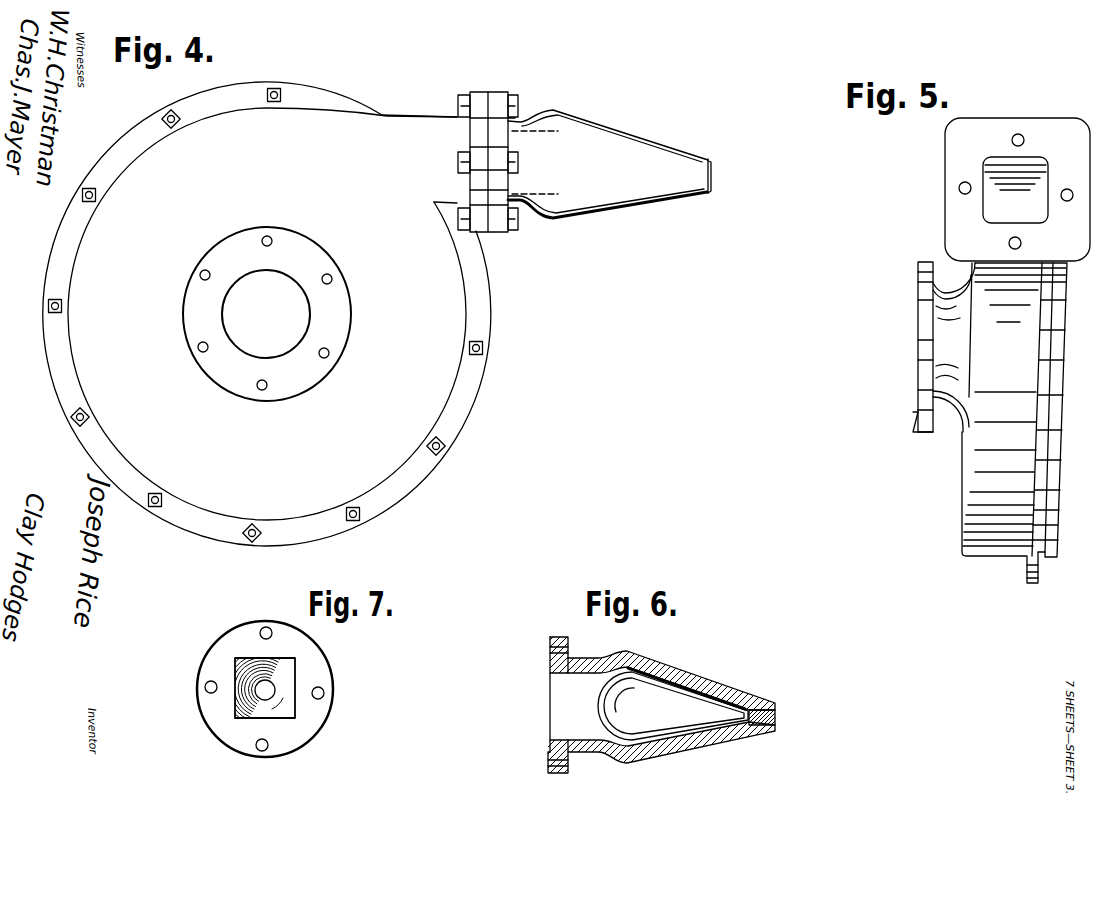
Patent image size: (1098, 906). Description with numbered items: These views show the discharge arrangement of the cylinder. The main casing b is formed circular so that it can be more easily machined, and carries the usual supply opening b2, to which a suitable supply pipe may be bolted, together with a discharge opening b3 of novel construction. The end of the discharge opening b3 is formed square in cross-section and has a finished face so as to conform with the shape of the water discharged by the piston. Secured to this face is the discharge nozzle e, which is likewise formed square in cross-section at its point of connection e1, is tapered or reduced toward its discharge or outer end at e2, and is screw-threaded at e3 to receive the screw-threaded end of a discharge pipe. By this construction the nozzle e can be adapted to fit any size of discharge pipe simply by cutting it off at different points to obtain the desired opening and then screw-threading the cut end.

In FIG. 4, the main casing b is at (267, 314).
In FIG. 5, the main casing b is at (980, 480).
In FIG. 4, the supply opening b2 is at (267, 314).
In FIG. 5, the supply opening b2 is at (916, 345).
In FIG. 4, the discharge opening b3 is at (422, 152).
In FIG. 5, the discharge opening b3 is at (962, 158).
In FIG. 4, the discharge nozzle e is at (585, 157).
In FIG. 7, the discharge nozzle e is at (218, 662).
In FIG. 6, the discharge nozzle e is at (680, 676).
In FIG. 7, the square connection point of nozzle e1 is at (295, 672).
In FIG. 6, the square connection point of nozzle e1 is at (562, 703).
In FIG. 7, the tapered portion of nozzle e2 is at (283, 706).
In FIG. 6, the tapered portion of nozzle e2 is at (720, 712).
In FIG. 4, the screw-threaded end of nozzle e3 is at (712, 177).
In FIG. 7, the screw-threaded end of nozzle e3 is at (262, 694).
In FIG. 6, the screw-threaded end of nozzle e3 is at (776, 718).